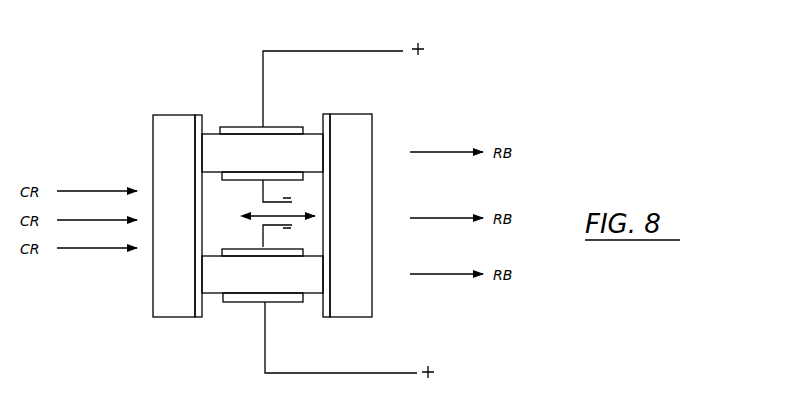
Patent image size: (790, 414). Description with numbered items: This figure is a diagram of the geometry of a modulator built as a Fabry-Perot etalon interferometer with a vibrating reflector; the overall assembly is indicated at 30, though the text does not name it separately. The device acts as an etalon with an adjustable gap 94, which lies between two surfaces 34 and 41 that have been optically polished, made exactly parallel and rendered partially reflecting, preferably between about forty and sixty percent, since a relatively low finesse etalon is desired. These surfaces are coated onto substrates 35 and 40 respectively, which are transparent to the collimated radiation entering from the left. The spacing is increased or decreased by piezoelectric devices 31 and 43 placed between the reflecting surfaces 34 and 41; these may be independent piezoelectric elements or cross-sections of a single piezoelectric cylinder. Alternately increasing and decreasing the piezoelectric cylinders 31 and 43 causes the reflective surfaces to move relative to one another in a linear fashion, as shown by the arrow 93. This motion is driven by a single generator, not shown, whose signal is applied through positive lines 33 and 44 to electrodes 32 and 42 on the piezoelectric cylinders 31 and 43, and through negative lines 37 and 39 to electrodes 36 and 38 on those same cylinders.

The electrode assembly 30 is at (185, 50).
The piezoelectric device 31 is at (211, 129).
The electrode 32 is at (238, 126).
The positive line 33 is at (383, 50).
The reflecting surface 34 is at (331, 112).
The substrate 35 is at (369, 112).
The electrode 36 is at (236, 182).
The negative line 37 is at (268, 190).
The electrode 38 is at (237, 247).
The negative line 39 is at (268, 240).
The substrate 40 is at (168, 320).
The reflecting surface 41 is at (199, 320).
The electrode 42 is at (238, 305).
The piezoelectric device 43 is at (320, 301).
The positive line 44 is at (377, 375).
The arrow 93 is at (296, 212).
The gap 94 is at (213, 192).